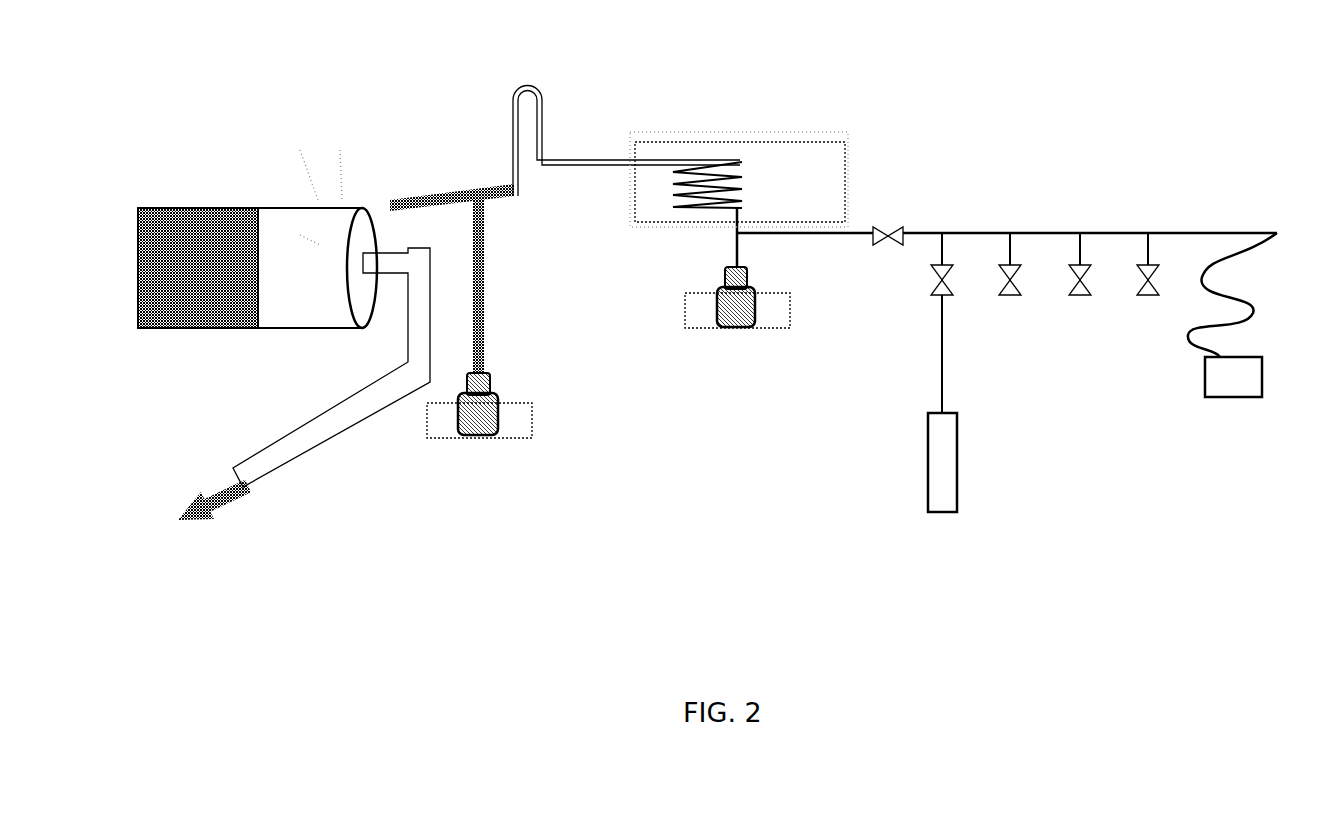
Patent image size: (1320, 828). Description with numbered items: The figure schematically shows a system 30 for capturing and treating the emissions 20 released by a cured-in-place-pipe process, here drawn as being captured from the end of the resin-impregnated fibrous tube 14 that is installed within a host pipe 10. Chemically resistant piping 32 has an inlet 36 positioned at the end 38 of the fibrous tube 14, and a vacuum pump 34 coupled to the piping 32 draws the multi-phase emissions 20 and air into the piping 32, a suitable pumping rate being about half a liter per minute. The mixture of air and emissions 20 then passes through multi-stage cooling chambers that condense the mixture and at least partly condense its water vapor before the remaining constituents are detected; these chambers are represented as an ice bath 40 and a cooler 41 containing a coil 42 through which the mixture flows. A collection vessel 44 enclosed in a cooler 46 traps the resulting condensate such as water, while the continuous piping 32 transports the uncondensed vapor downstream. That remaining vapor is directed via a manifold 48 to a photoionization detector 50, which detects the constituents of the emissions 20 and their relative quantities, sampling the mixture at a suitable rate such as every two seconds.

The host pipe 10 is at (177, 217).
The fibrous tube 14 is at (297, 318).
The emissions 20 is at (342, 171).
The system 30 is at (1097, 93).
The piping 32 is at (560, 167).
The vacuum pump 34 is at (1220, 383).
The inlet 36 is at (390, 204).
The end 38 is at (365, 310).
The ice bath 40 is at (533, 422).
The cooler 41 is at (810, 142).
The coil 42 is at (698, 160).
The collection vessel 44 is at (722, 308).
The cooler 46 is at (792, 310).
The manifold 48 is at (1050, 232).
The photoionization detector (PID) 50 is at (950, 472).